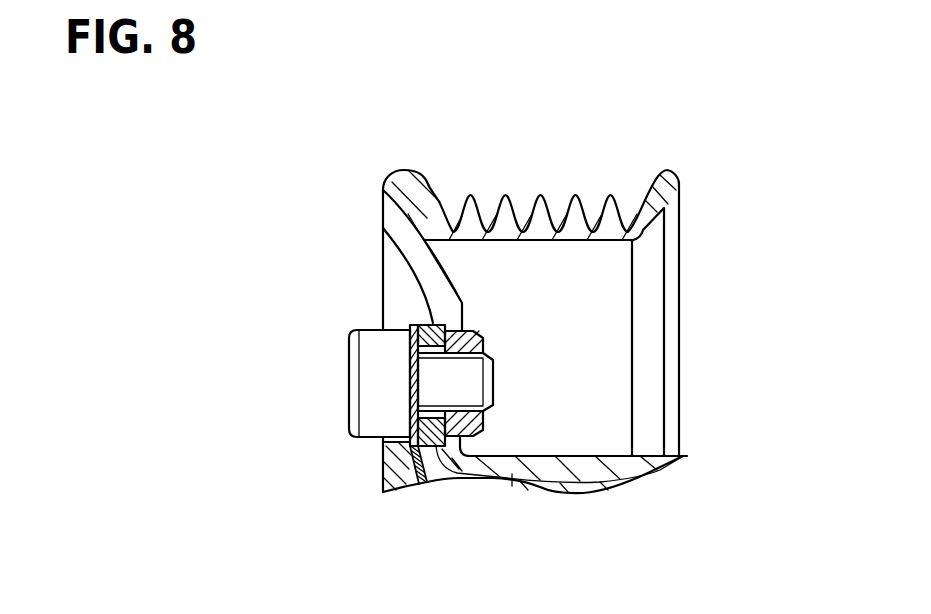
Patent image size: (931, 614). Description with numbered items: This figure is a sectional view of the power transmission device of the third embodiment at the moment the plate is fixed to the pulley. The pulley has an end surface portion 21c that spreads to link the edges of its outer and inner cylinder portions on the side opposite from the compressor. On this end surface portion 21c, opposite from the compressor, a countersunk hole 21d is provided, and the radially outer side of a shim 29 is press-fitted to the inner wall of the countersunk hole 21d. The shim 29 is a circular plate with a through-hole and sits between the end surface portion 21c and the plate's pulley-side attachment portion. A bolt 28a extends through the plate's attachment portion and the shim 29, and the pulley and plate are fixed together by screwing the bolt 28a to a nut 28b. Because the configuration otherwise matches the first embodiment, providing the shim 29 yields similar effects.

The end surface portion 21c is at (410, 247).
The countersunk hole 21d is at (432, 446).
The shim 29 is at (433, 320).
The bolt 28a is at (373, 368).
The nut 28b is at (480, 337).